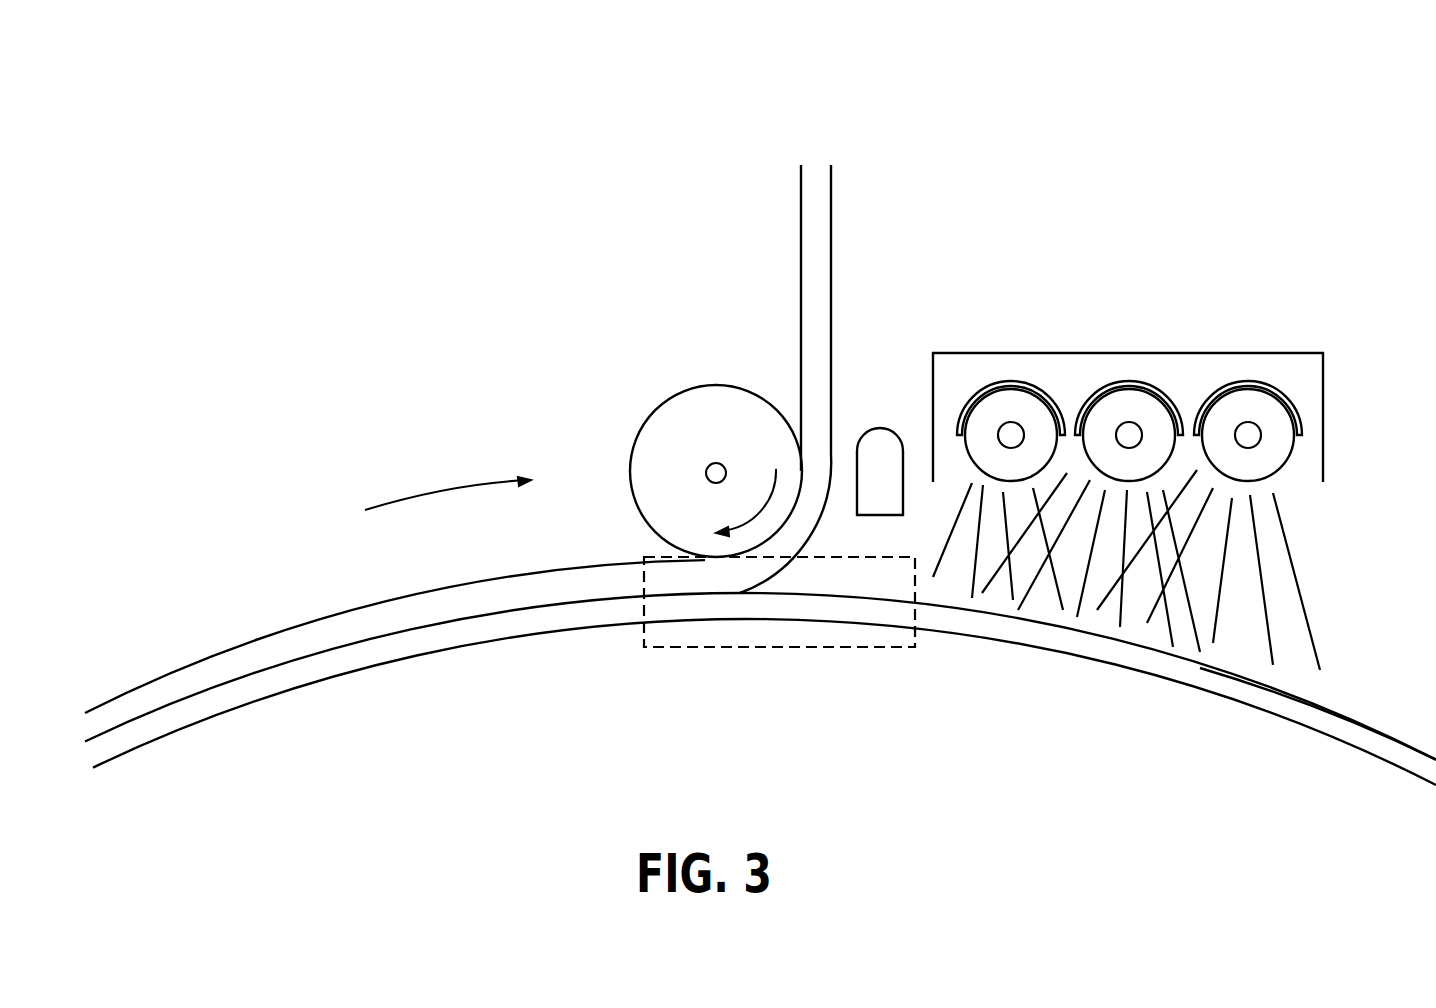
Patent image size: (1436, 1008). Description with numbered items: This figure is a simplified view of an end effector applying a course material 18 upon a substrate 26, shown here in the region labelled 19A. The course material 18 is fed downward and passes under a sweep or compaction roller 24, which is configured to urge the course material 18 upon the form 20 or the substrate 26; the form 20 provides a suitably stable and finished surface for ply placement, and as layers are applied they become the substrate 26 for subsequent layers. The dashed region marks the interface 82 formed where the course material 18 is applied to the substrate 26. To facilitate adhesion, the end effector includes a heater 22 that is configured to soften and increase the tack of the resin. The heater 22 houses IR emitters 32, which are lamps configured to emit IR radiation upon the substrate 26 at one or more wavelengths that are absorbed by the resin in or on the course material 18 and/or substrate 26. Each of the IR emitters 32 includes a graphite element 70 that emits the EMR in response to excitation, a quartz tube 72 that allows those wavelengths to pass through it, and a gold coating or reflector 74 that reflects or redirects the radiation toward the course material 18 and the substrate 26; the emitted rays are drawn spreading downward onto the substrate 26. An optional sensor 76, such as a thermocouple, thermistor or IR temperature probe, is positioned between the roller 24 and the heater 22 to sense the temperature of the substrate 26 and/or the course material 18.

The processing station 19A is at (682, 66).
The course material 18 is at (831, 220).
The form 20 is at (617, 698).
The heater 22 is at (947, 353).
The compaction roller 24 is at (705, 440).
The substrate 26 is at (1353, 715).
The IR emitters 32 is at (1237, 367).
The graphite element 70 is at (1011, 422).
The quartz tube 72 is at (1033, 415).
The reflector 74 is at (1005, 381).
The sensor 76 is at (878, 427).
The interface 82 is at (863, 648).